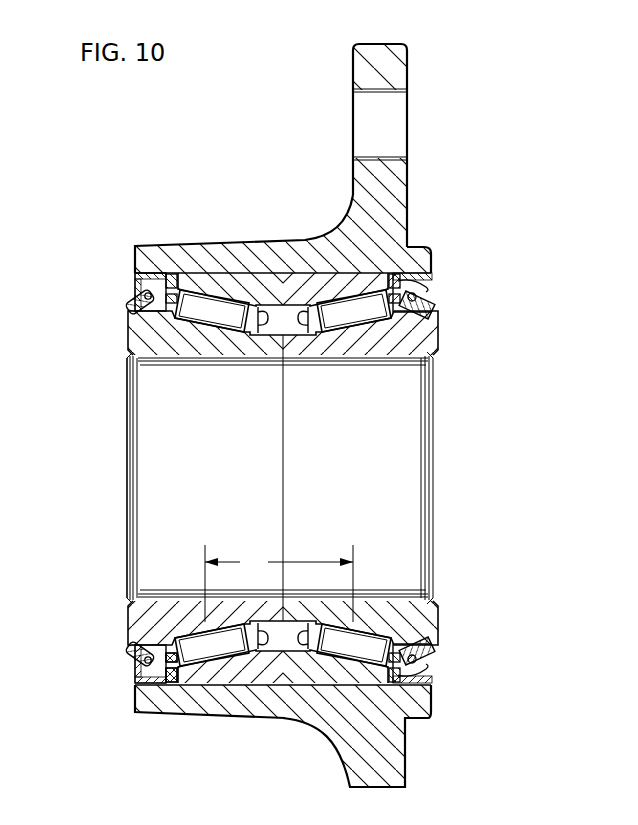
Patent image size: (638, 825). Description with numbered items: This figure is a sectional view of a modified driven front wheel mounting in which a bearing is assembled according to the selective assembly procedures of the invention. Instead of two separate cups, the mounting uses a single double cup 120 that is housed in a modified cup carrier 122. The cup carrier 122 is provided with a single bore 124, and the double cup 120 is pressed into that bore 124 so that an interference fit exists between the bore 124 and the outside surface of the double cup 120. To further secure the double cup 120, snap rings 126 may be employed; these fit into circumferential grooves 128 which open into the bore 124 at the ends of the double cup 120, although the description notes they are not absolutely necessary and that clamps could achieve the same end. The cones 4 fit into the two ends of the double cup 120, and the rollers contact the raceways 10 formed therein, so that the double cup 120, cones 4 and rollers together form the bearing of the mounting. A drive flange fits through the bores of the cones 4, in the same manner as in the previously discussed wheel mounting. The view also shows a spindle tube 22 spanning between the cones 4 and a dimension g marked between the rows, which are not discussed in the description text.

The cone 4 is at (201, 352).
The raceway 10 is at (200, 294).
The spindle tube 22 is at (124, 491).
The double cup 120 is at (267, 282).
The cup carrier 122 is at (302, 240).
The bore 124 is at (428, 287).
The snap ring 126 is at (408, 720).
The circumferential groove 128 is at (196, 690).
The dimension g is at (279, 583).